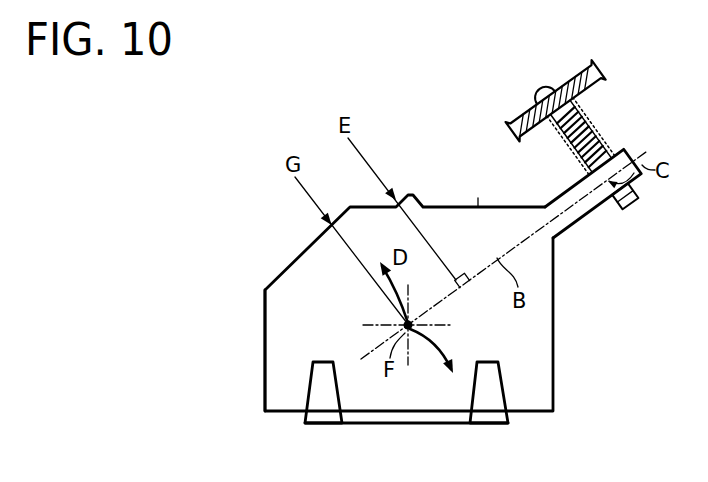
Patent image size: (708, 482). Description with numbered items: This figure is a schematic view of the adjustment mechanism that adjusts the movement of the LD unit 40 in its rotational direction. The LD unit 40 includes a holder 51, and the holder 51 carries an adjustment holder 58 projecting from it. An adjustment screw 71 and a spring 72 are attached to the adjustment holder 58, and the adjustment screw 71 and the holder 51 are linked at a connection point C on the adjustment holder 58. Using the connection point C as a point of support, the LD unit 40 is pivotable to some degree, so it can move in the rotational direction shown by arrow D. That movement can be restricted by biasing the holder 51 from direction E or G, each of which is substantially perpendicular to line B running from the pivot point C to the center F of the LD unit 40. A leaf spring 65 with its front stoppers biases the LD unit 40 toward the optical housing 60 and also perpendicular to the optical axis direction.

The LD unit 40 is at (258, 252).
The holder 51 is at (265, 353).
The adjustment holder 58 is at (575, 230).
The optical housing 60 is at (522, 120).
The leaf spring 65 is at (402, 428).
The adjustment screw 71 is at (633, 212).
The spring 72 is at (598, 132).